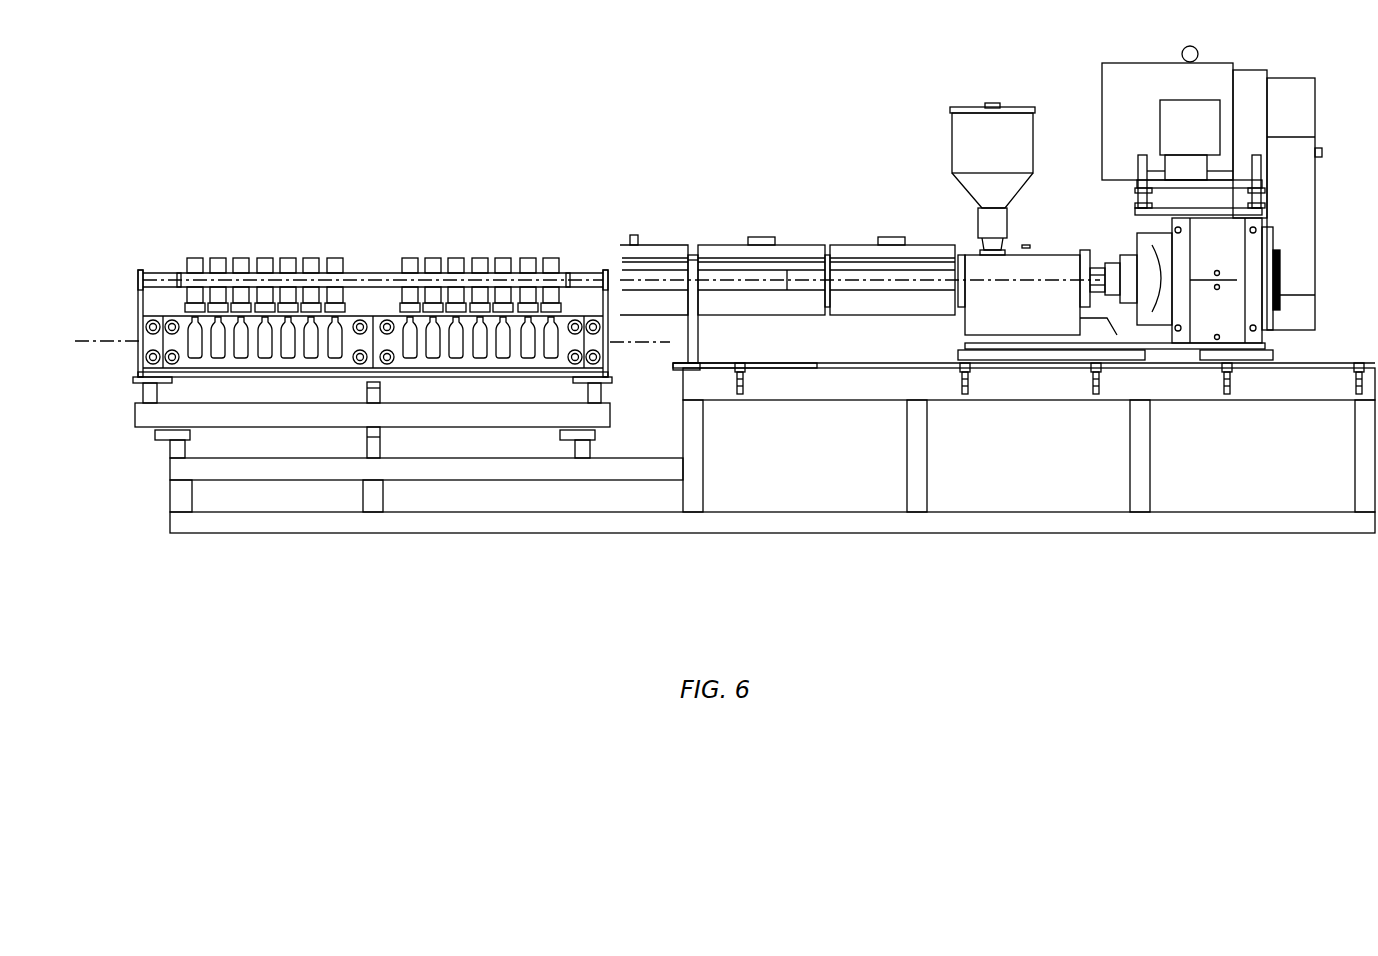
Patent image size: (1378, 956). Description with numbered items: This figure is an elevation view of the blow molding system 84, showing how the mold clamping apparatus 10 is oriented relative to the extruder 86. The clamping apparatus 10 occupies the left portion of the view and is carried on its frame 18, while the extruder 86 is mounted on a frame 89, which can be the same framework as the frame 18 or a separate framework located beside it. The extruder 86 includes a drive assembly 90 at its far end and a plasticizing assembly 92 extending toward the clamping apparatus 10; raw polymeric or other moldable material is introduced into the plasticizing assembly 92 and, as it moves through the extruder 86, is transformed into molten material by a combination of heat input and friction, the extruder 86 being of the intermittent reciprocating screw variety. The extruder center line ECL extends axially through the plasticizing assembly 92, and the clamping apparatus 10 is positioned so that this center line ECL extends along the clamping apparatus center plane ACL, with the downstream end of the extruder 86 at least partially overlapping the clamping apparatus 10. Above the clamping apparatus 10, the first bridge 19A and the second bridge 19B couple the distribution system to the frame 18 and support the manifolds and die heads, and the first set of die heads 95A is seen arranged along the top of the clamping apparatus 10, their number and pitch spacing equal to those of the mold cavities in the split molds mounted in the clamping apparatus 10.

The blow molding system 84 is at (197, 126).
The mold clamping apparatus 10 is at (128, 389).
The first set of die heads 95A is at (181, 264).
The first bridge 19A is at (618, 322).
The second bridge 19B is at (137, 272).
The clamping apparatus center plane ACL is at (92, 340).
The frame of the clamping apparatus 18 is at (460, 492).
The frame 89 is at (867, 542).
The extruder 86 is at (897, 130).
The plasticizing assembly 92 is at (813, 238).
The extruder center line ECL is at (927, 278).
The drive assembly 90 is at (1290, 240).